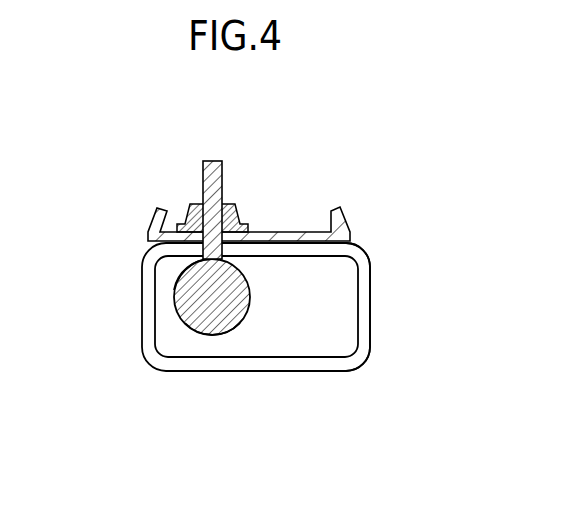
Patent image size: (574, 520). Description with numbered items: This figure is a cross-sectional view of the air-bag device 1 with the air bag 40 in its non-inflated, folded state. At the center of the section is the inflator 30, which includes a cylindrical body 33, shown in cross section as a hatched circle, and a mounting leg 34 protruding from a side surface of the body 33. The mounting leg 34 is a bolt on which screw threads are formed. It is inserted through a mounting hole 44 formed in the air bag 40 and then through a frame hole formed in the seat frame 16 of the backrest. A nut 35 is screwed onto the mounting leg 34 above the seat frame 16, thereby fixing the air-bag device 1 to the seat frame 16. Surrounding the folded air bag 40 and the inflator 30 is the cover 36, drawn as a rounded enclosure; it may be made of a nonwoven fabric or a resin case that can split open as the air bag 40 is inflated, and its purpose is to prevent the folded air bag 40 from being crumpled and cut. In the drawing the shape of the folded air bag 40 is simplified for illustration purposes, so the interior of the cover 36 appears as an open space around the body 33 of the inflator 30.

The air-bag device 1 is at (315, 382).
The seat frame 16 is at (320, 232).
The inflator 30 is at (201, 350).
The body 33 is at (222, 336).
The mounting leg 34 is at (211, 161).
The nut 35 is at (198, 203).
The cover 36 is at (370, 282).
The air bag 40 is at (282, 295).
The mounting hole 44 is at (187, 270).